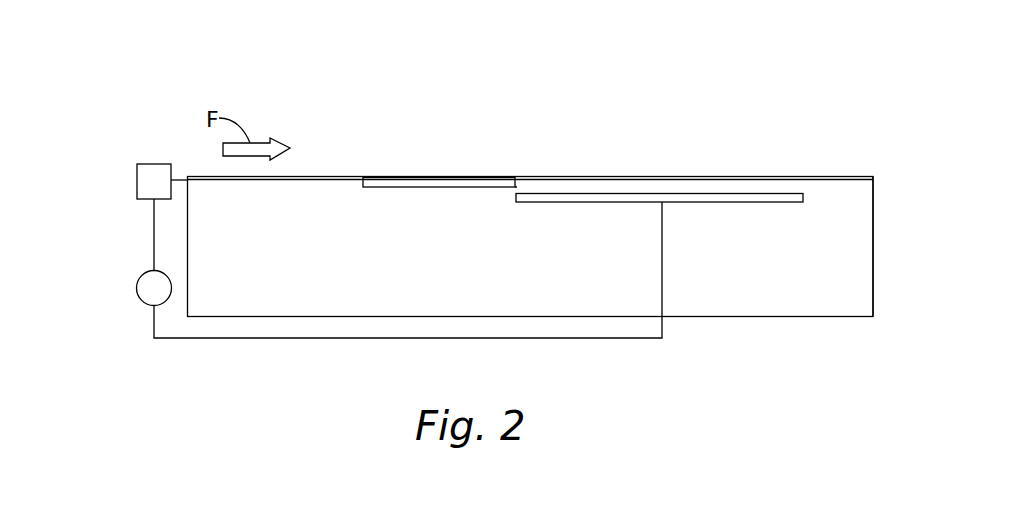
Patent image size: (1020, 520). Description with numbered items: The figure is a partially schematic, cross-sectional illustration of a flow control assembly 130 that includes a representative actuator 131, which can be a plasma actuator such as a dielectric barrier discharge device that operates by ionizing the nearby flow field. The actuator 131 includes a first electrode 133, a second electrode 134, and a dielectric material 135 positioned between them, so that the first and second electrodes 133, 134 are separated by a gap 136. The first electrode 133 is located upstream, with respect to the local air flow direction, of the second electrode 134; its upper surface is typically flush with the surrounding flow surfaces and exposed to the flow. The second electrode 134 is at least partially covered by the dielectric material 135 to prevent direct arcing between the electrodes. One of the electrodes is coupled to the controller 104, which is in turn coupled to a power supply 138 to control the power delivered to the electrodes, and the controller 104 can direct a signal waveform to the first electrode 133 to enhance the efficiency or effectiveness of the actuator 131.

The controller 104 is at (137, 180).
The flow control assembly 130 is at (603, 70).
The actuator 131 is at (607, 168).
The first electrode 133 is at (427, 176).
The second electrode 134 is at (715, 198).
The dielectric material 135 is at (847, 195).
The gap 136 is at (517, 188).
The power supply 138 is at (137, 298).